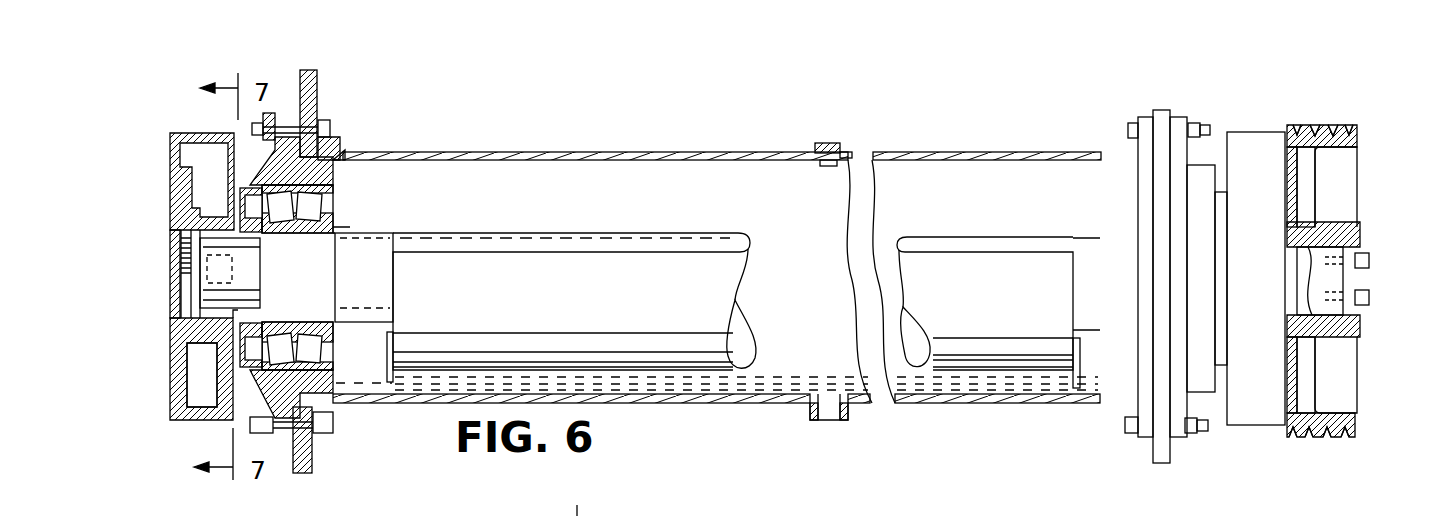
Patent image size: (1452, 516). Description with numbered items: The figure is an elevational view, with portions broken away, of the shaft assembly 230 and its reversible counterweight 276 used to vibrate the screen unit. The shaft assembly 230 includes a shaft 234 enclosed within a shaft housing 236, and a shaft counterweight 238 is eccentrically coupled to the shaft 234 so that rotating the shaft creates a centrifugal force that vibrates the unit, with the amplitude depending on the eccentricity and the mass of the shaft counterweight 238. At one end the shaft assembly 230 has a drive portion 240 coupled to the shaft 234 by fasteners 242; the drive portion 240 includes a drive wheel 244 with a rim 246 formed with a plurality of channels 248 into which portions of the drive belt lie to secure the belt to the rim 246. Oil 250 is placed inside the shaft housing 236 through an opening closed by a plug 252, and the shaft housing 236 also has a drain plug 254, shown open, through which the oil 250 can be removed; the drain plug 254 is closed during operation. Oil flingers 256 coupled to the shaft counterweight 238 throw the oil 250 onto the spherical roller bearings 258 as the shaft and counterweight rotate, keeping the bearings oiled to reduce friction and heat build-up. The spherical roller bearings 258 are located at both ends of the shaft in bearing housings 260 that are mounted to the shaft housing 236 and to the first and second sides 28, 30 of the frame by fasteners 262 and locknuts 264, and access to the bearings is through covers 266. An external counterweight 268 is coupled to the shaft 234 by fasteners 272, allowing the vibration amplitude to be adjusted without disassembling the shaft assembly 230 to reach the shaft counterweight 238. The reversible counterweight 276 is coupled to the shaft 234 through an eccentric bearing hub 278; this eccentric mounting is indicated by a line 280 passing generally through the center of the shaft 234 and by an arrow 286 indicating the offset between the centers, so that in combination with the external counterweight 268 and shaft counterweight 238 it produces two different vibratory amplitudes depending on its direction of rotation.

The first side of frame 28 is at (1160, 455).
The second side of frame 30 is at (303, 438).
The shaft assembly 230 is at (1012, 135).
The shaft 234 is at (373, 250).
The shaft housing 236 is at (592, 148).
The shaft counterweight 238 is at (985, 330).
The drive portion 240 is at (1272, 438).
The fasteners 242 is at (1369, 260).
The drive wheel 244 is at (1305, 385).
The rim 246 is at (1347, 128).
The channels 248 is at (1314, 126).
The oil 250 is at (698, 395).
The plug 252 is at (845, 143).
The drain plug 254 is at (848, 412).
The oil flingers 256 is at (391, 385).
The spherical roller bearings 258 is at (330, 150).
The bearing housings 260 is at (292, 110).
The fasteners 262 is at (340, 120).
The locknuts 264 is at (268, 123).
The covers 266 is at (257, 157).
The external counterweight 268 is at (165, 412).
The fasteners 272 is at (180, 257).
The reversible counterweight 276 is at (200, 378).
The eccentric bearing hub 278 is at (210, 227).
The line 280 is at (548, 515).
The arrow 286 is at (479, 504).